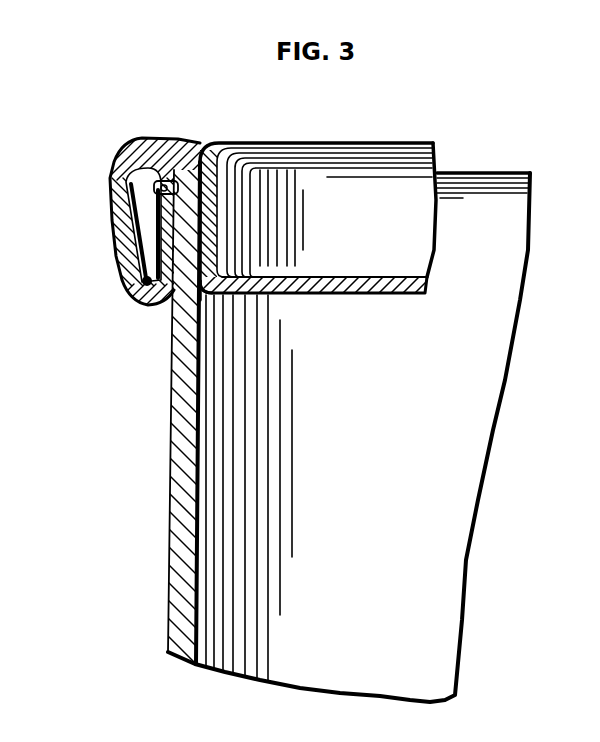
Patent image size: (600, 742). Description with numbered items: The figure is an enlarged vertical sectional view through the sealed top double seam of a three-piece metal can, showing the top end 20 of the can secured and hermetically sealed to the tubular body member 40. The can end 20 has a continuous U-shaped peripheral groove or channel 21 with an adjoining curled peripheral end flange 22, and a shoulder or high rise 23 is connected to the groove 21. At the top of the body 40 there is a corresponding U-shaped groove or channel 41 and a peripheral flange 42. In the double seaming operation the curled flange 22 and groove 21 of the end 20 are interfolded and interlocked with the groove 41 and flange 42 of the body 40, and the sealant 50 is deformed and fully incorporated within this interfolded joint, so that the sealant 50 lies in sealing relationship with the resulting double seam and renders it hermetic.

The can end 20 is at (380, 300).
The U-shaped peripheral groove 21 is at (147, 163).
The curled peripheral end flange 22 is at (197, 153).
The shoulder 23 is at (195, 308).
The body member 40 is at (182, 362).
The U-shaped groove 41 is at (168, 186).
The peripheral flange 42 is at (150, 237).
The sealant 50 is at (127, 177).